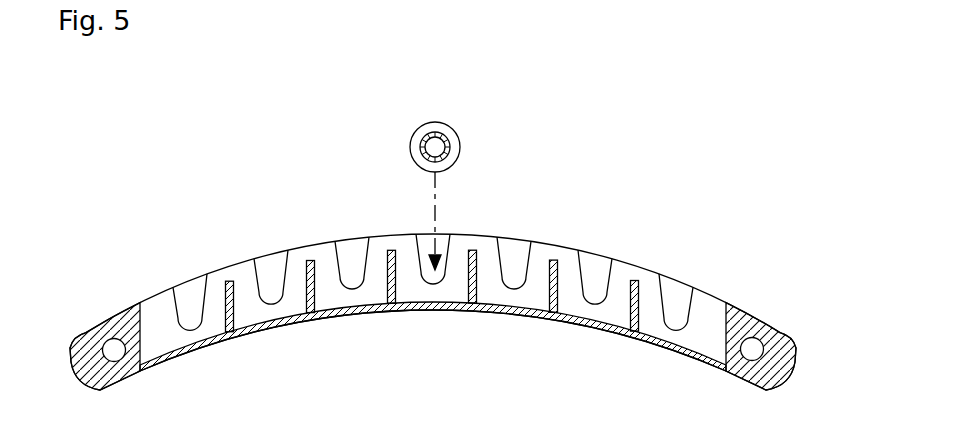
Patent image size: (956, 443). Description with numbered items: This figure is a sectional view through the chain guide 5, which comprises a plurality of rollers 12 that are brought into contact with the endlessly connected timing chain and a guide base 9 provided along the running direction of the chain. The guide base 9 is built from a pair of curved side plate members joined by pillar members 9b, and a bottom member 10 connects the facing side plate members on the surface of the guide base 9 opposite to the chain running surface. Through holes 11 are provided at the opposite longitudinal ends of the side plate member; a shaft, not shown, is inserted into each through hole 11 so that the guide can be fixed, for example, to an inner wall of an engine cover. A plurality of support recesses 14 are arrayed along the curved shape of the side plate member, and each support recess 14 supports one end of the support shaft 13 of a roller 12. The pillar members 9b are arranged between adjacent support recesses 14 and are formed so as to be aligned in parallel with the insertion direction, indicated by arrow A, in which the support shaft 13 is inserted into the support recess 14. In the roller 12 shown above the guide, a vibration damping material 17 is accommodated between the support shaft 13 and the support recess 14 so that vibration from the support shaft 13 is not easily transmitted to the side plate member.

The chain guide 5 is at (622, 251).
The guide base 9 is at (382, 317).
The pillar member 9b is at (562, 262).
The bottom member 10 is at (527, 310).
The through hole 11 is at (113, 347).
The roller 12 is at (465, 148).
The support shaft 13 is at (433, 148).
The support recess 14 is at (508, 248).
The vibration damping material 17 is at (424, 148).
The insertion direction A is at (433, 207).